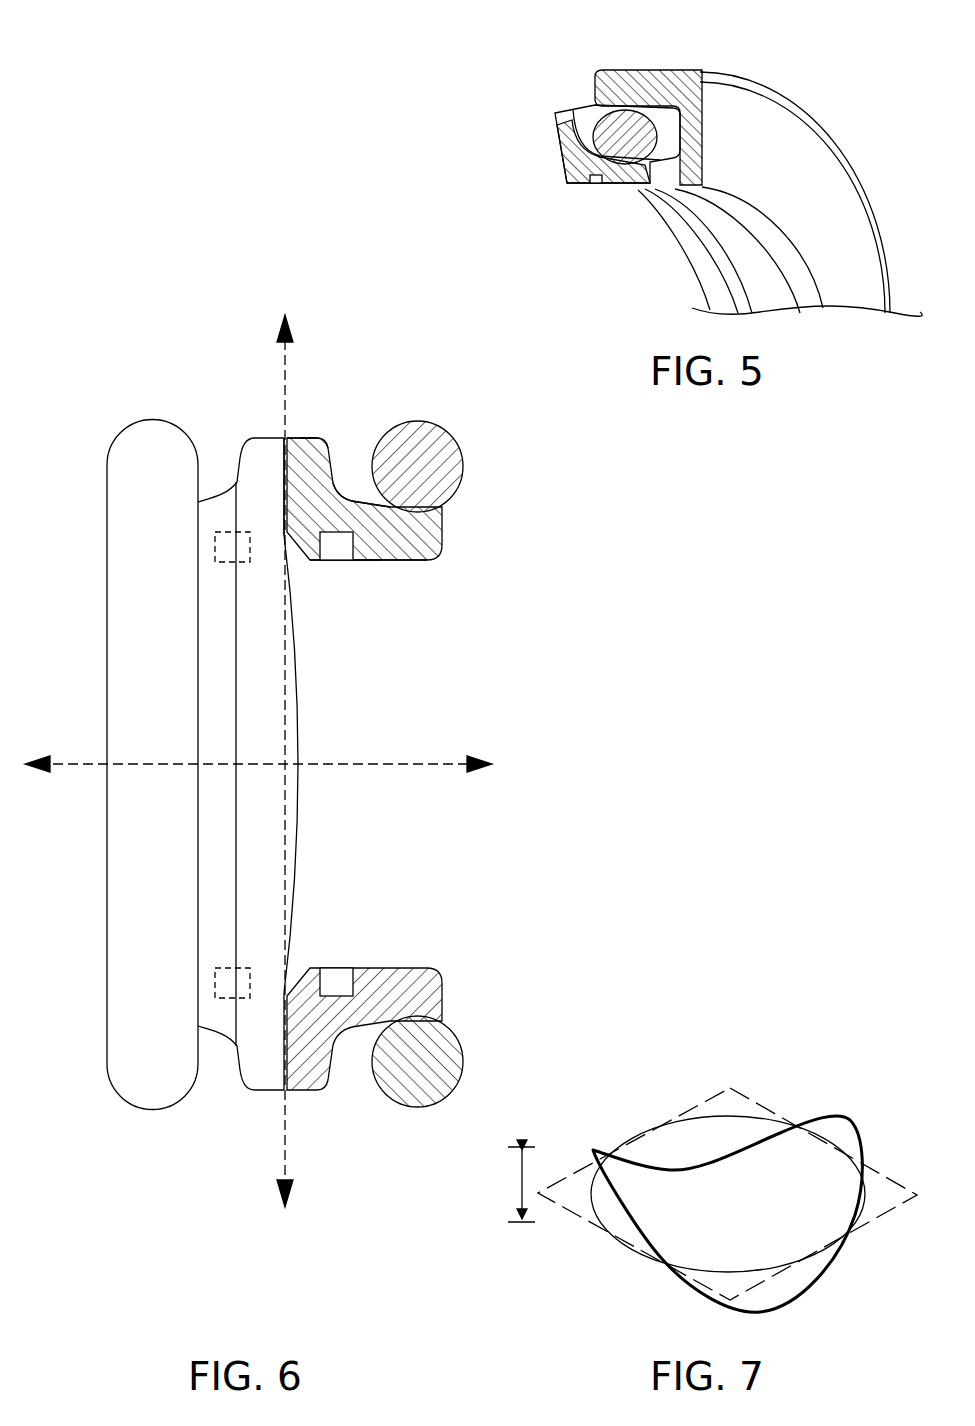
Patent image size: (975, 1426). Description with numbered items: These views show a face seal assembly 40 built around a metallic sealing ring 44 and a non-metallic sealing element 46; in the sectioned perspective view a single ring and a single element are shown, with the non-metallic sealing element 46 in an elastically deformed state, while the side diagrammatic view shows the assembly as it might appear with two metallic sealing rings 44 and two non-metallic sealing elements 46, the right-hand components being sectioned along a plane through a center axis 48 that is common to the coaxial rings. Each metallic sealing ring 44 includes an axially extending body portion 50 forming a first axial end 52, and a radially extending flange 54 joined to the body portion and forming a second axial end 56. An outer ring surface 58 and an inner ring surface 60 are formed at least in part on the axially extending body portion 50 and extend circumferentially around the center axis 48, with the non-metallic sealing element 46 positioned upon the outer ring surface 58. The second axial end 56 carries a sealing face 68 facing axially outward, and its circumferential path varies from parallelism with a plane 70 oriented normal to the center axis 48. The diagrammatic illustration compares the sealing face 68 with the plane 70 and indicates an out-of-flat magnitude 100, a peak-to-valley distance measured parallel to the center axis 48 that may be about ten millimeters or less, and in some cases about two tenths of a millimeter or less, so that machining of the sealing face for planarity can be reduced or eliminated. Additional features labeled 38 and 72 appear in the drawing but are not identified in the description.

In FIG. 5, the housing wall 38 is at (687, 70).
In FIG. 5, the face seal assembly 40 is at (810, 58).
In FIG. 6, the face seal assembly 40 is at (487, 436).
In FIG. 5, the metallic sealing ring 44 is at (558, 122).
In FIG. 6, the metallic sealing ring 44 is at (238, 474).
In FIG. 5, the non-metallic sealing element 46 is at (600, 112).
In FIG. 6, the non-metallic sealing element 46 is at (135, 424).
In FIG. 6, the center axis 48 is at (418, 762).
In FIG. 6, the axially extending body portion 50 is at (403, 556).
In FIG. 6, the first axial end 52 is at (462, 536).
In FIG. 6, the radially extending flange 54 is at (313, 445).
In FIG. 6, the second axial end 56 is at (274, 459).
In FIG. 6, the outer ring surface 58 is at (385, 503).
In FIG. 6, the inner ring surface 60 is at (362, 561).
In FIG. 6, the sealing face 68 is at (299, 785).
In FIG. 7, the sealing face 68 is at (838, 1114).
In FIG. 6, the plane 70 is at (287, 355).
In FIG. 7, the plane 70 is at (885, 1214).
In FIG. 5, the spring element 72 is at (597, 185).
In FIG. 6, the spring element 72 is at (215, 540).
In FIG. 7, the out-of-flat magnitude 100 is at (522, 1183).